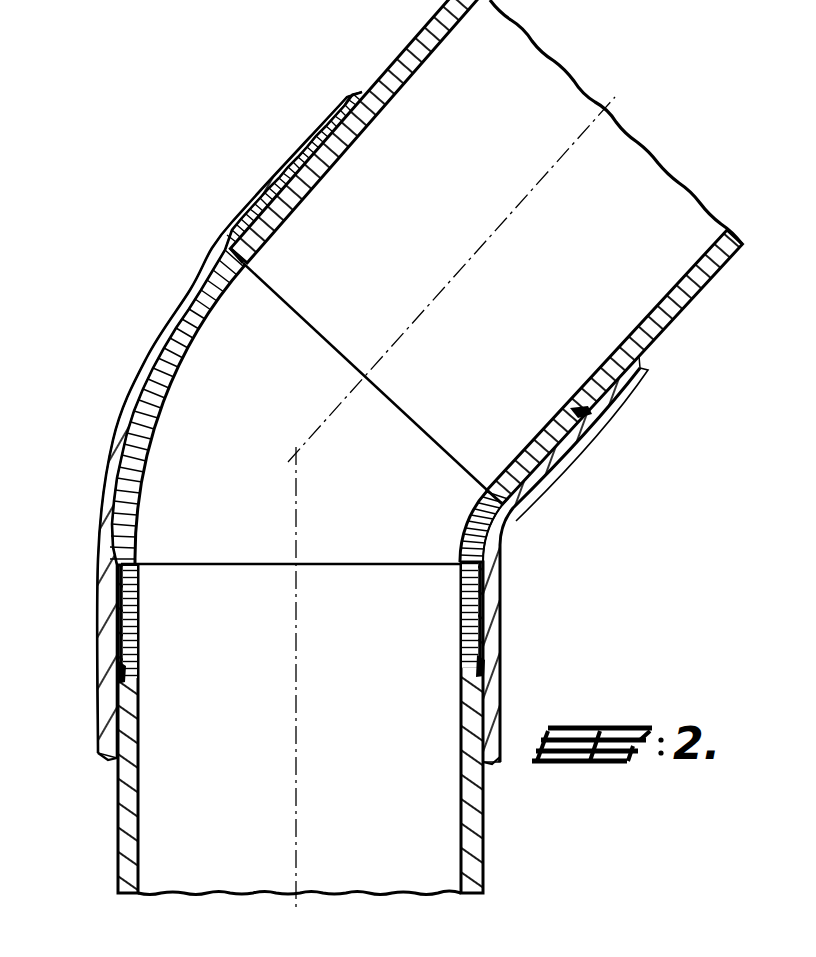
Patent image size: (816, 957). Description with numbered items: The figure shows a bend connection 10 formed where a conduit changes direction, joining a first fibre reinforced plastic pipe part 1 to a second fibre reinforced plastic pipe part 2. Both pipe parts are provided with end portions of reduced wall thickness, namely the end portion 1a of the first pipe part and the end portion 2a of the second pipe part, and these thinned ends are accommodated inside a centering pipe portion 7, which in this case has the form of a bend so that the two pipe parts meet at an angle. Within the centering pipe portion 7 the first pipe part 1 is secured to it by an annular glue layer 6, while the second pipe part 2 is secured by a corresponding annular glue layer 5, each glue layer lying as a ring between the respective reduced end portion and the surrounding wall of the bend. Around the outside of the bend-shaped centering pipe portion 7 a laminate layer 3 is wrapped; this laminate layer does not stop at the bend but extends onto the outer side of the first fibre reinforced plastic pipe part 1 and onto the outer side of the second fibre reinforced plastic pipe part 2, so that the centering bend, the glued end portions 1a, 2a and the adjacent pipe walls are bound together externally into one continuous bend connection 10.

The first fibre reinforced plastic pipe part 1 is at (127, 812).
The end portion of the first fibre reinforced plastic pipe part 1a is at (133, 605).
The second fibre reinforced plastic pipe part 2 is at (413, 55).
The end portion of the second fibre reinforced plastic pipe part 2a is at (283, 222).
The laminate layer 3 is at (170, 305).
The annular glue layer 5 is at (580, 410).
The annular glue layer 6 is at (461, 640).
The centering pipe portion 7 is at (162, 388).
The bend connection 10 is at (97, 391).